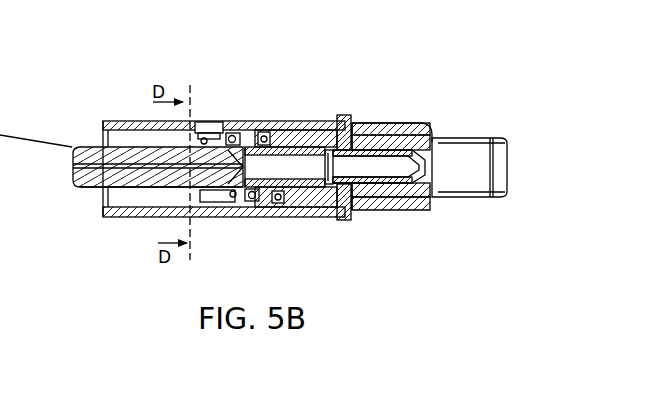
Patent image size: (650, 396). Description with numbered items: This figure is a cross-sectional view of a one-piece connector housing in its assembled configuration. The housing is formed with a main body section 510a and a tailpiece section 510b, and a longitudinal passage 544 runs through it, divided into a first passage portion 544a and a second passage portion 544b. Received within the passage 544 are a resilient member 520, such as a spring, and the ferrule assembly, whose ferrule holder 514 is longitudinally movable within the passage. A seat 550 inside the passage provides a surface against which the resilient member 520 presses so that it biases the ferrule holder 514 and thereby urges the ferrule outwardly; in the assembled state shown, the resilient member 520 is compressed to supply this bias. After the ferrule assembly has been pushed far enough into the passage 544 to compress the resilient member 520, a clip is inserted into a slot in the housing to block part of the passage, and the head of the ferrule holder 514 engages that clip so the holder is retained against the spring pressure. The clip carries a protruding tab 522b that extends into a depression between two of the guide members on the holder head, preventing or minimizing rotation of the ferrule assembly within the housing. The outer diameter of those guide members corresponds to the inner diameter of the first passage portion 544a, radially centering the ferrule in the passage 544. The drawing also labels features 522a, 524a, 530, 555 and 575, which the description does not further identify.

The main body section 510a is at (127, 127).
The tailpiece section 510b is at (375, 140).
The ferrule holder 514 is at (296, 190).
The resilient member 520 is at (273, 200).
The lower clamp arm 522a is at (197, 198).
The protruding tab 522b is at (203, 138).
The clamp ring 524a is at (212, 125).
The connector end 530 is at (437, 137).
The longitudinal passage 544 is at (92, 137).
The first passage portion 544a is at (163, 197).
The second passage portion 544b is at (335, 196).
The seat 550 is at (270, 140).
The sleeve 555 is at (370, 195).
The collar 575 is at (343, 140).